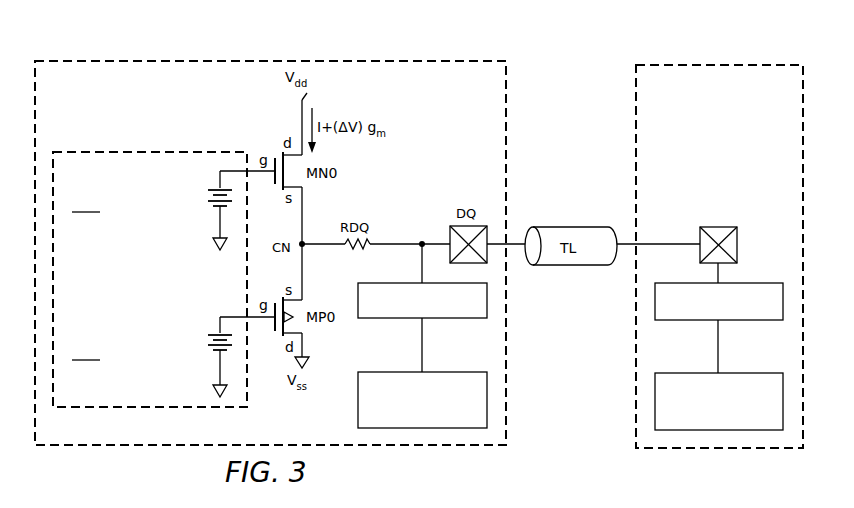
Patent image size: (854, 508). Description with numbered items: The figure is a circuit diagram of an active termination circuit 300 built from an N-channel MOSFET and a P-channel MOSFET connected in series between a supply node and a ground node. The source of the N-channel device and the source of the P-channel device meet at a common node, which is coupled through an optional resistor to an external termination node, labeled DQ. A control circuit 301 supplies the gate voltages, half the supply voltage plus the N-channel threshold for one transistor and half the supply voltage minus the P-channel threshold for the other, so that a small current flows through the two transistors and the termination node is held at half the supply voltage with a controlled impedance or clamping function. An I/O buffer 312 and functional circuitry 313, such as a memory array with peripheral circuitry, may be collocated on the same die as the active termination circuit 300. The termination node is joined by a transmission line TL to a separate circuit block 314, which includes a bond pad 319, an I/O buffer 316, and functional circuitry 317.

The active termination circuit 300 is at (223, 59).
The control circuit 301 is at (146, 151).
The I/O buffer 312 is at (392, 320).
The functional circuitry 313 is at (450, 371).
The circuit block 314 is at (748, 62).
The I/O buffer 316 is at (691, 321).
The functional circuitry 317 is at (745, 372).
The bond pad 319 is at (738, 240).